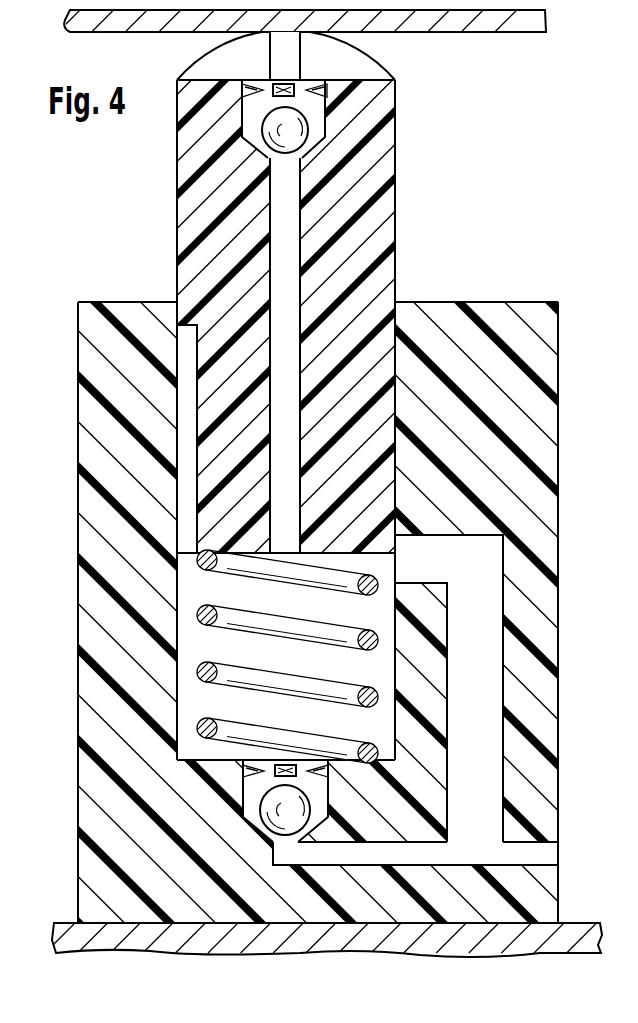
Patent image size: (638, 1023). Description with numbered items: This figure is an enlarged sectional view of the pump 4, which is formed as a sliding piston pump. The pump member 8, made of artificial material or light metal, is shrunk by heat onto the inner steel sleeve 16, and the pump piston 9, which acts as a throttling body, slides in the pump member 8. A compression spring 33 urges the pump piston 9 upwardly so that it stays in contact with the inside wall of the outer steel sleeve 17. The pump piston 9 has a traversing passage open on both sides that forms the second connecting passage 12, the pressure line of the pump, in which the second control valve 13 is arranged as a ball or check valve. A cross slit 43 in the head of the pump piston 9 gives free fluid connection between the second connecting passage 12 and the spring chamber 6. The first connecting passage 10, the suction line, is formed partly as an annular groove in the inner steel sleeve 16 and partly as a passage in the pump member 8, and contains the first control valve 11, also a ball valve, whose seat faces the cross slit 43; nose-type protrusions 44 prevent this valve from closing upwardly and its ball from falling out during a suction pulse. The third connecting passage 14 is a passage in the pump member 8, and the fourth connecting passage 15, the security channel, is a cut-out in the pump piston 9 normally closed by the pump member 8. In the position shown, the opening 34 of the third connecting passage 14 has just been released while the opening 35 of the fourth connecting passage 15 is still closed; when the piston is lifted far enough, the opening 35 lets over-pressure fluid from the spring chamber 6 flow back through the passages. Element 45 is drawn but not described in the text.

The pump 4 is at (319, 450).
The spring chamber 6 is at (500, 180).
The pump member 8 is at (319, 511).
The pump piston 9 is at (382, 112).
The first connecting passage 10 is at (443, 853).
The first control valve 11 is at (300, 787).
The second connecting passage 12 is at (297, 383).
The second control valve 13 is at (298, 128).
The third connecting passage 14 is at (490, 644).
The fourth connecting passage 15 is at (188, 410).
The inner steel sleeve 16 is at (578, 932).
The outer steel sleeve 17 is at (487, 26).
The compression spring 33 is at (335, 692).
The opening 34 is at (395, 568).
The opening 35 is at (170, 297).
The cross slit 43 is at (280, 60).
The nose-type protrusions 44 is at (240, 770).
The upper valve spring element 45 is at (317, 80).